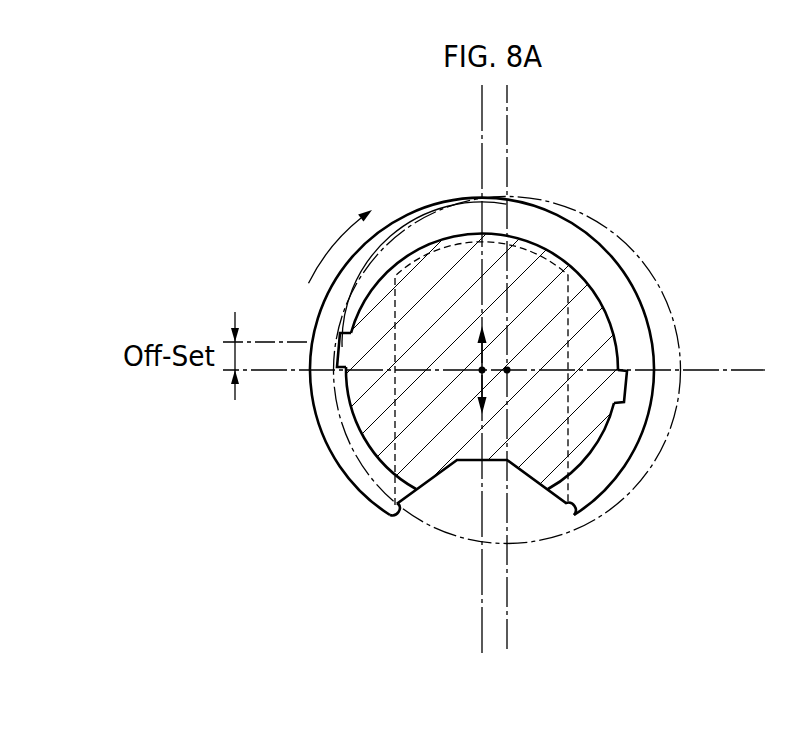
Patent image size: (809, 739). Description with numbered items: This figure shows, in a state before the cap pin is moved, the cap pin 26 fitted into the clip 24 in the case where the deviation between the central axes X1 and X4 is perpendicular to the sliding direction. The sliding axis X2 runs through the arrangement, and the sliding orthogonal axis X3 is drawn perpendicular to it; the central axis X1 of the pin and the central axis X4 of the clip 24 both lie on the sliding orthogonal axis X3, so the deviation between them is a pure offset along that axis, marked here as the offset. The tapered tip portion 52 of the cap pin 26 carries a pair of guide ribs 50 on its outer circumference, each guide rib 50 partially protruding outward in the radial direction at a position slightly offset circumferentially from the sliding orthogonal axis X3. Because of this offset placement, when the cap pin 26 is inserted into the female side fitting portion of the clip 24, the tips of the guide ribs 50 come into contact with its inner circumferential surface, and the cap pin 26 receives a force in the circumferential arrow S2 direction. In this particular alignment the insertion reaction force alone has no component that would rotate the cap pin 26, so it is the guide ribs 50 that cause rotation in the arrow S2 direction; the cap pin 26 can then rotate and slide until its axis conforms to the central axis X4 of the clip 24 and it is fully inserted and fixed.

The clip 24 is at (600, 218).
The cap pin 26 is at (389, 214).
The guide rib 50 is at (339, 342).
The tip portion 52 is at (437, 206).
The arrow S2 direction S2 is at (330, 250).
The central axis X1 is at (480, 372).
The sliding axis X2 is at (480, 378).
The sliding orthogonal axis X3 is at (735, 372).
The central axis of the clip X4 is at (508, 372).